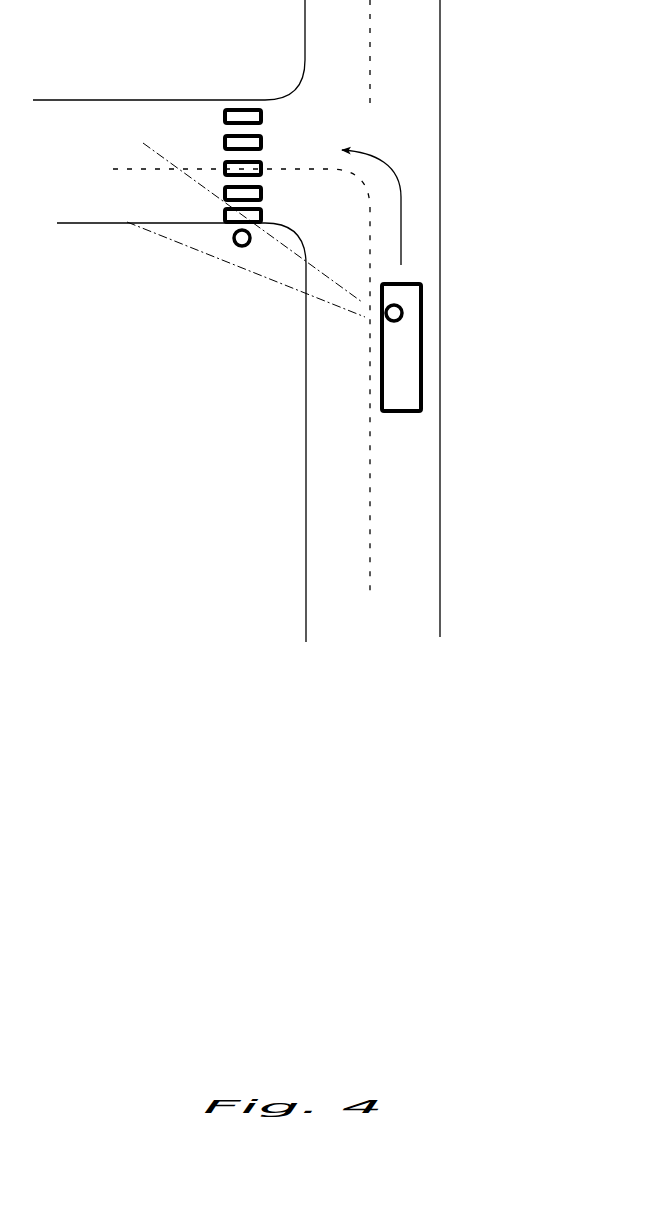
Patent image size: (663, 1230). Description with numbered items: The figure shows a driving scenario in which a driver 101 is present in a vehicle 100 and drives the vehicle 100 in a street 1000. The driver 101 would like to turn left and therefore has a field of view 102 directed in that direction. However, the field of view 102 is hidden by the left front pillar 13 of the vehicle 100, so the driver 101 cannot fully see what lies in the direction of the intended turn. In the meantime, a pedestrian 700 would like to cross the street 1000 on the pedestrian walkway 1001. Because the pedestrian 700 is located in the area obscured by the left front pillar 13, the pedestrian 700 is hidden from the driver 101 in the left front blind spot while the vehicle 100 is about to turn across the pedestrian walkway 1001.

The street 1000 is at (422, 117).
The pedestrian walkway 1001 is at (245, 105).
The pedestrian 700 is at (235, 245).
The field of view 102 is at (335, 298).
The left front pillar 13 is at (367, 315).
The driver 101 is at (386, 321).
The vehicle 100 is at (400, 414).